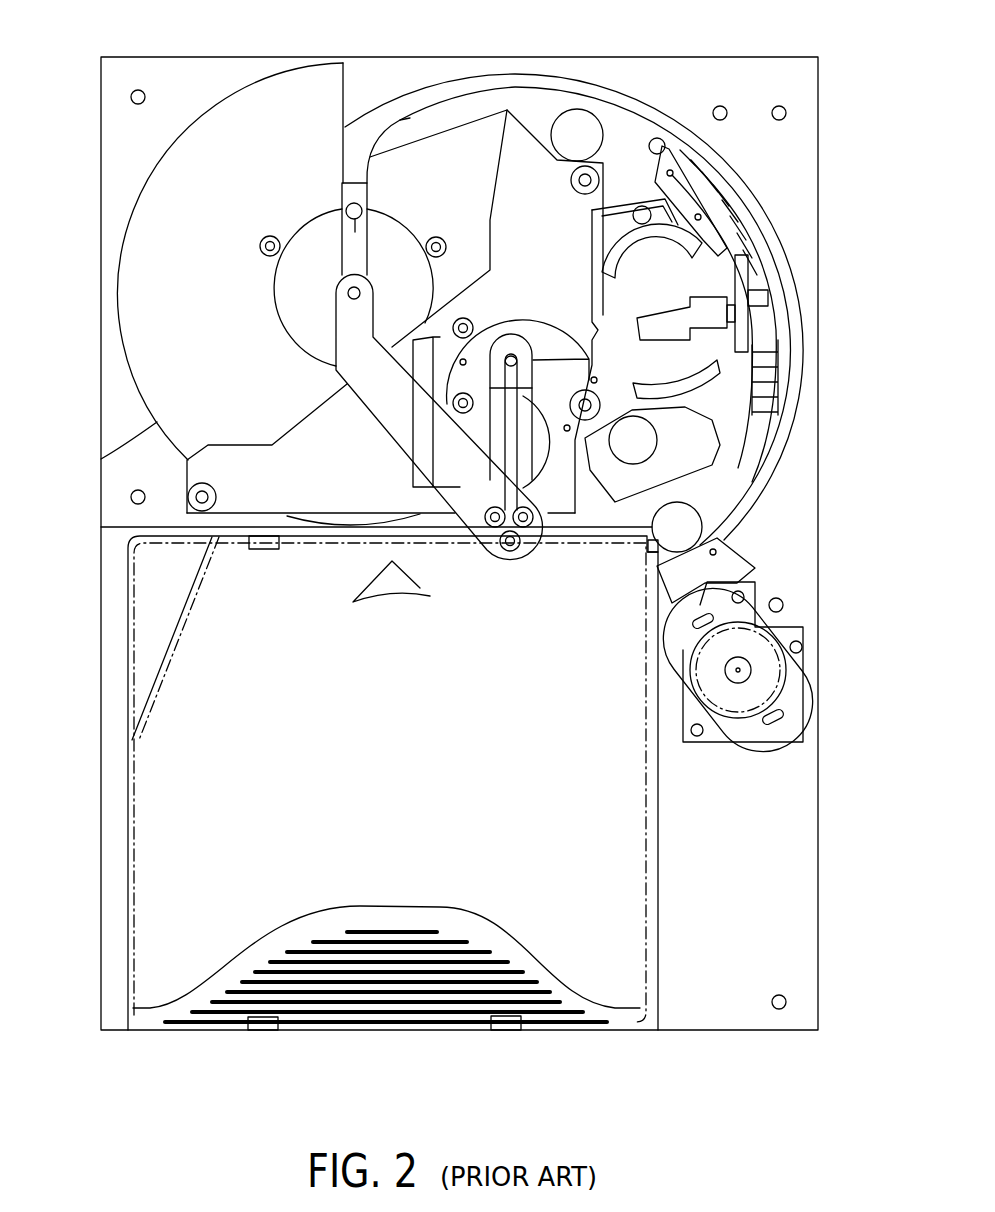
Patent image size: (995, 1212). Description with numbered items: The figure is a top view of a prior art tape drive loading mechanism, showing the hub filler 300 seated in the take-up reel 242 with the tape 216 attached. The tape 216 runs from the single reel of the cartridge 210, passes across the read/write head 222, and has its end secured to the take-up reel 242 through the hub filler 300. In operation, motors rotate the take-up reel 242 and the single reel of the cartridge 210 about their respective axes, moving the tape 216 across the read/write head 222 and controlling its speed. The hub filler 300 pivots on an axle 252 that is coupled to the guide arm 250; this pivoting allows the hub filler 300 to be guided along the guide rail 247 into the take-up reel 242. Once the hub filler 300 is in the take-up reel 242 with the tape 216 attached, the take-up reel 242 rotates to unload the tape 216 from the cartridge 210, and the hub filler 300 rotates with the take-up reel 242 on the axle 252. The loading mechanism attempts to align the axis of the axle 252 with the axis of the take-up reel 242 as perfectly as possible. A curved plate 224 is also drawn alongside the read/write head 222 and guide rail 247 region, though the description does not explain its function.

The cartridge 210 is at (650, 872).
The tape 216 is at (545, 118).
The read/write head 222 is at (738, 316).
The curved guide plate 224 is at (745, 262).
The take-up reel 242 is at (103, 459).
The guide rail 247 is at (773, 208).
The guide arm 250 is at (398, 440).
The axle 252 is at (350, 298).
The hub filler 300 is at (348, 231).